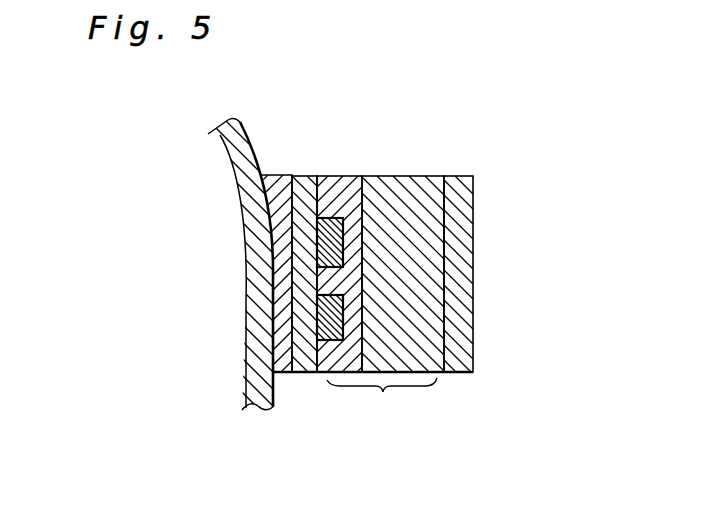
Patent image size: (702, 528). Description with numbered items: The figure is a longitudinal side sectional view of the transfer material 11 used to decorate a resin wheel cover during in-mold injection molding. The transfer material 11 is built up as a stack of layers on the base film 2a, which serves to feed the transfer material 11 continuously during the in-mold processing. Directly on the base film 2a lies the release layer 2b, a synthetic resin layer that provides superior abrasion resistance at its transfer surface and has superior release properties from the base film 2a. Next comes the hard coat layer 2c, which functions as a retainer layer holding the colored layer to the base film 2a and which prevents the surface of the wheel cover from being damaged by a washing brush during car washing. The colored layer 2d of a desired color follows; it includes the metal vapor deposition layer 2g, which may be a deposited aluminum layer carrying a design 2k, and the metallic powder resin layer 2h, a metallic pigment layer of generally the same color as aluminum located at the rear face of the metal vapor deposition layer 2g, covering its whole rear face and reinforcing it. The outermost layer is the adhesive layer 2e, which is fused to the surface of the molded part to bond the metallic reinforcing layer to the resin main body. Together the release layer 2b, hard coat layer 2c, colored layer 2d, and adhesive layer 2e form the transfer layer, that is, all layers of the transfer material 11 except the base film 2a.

The transfer material 11 is at (125, 267).
The base film 2a is at (236, 172).
The release layer 2b is at (282, 173).
The hard coat layer 2c is at (310, 174).
The metal vapor deposition layer 2g is at (343, 188).
The metallic powder resin layer 2h is at (398, 190).
The adhesive layer 2e is at (462, 178).
The design 2k is at (337, 243).
The colored layer 2d is at (382, 409).